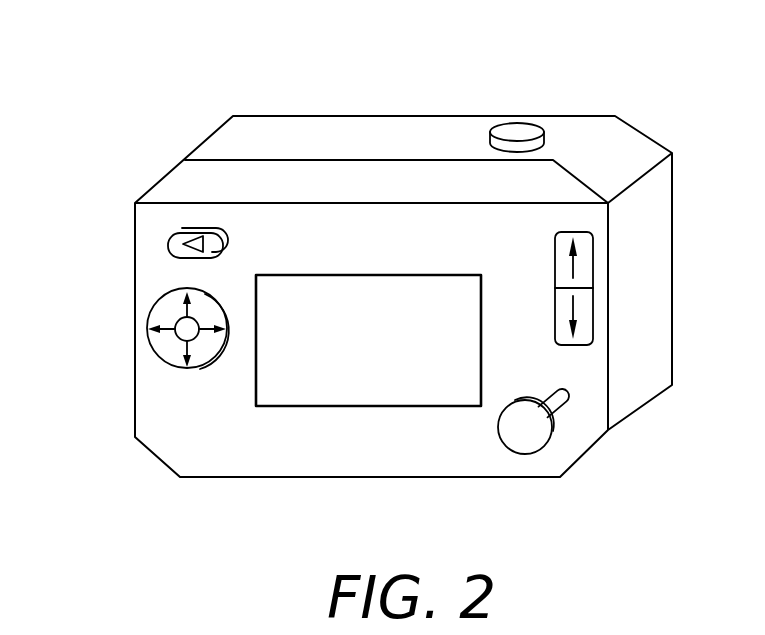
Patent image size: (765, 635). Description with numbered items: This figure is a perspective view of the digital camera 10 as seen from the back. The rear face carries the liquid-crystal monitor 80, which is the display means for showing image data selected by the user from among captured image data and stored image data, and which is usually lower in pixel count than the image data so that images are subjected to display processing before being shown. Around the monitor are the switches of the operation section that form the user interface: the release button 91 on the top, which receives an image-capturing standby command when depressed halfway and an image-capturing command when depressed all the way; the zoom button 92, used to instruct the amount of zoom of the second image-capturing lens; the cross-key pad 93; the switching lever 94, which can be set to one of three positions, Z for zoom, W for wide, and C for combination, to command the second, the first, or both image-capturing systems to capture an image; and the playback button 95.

The digital camera 10 is at (402, 92).
The liquid-crystal monitor 80 is at (333, 408).
The release button 91 is at (522, 132).
The zoom button 92 is at (585, 262).
The cross-key pad 93 is at (165, 368).
The switching lever 94 is at (523, 428).
The playback button 95 is at (177, 242).